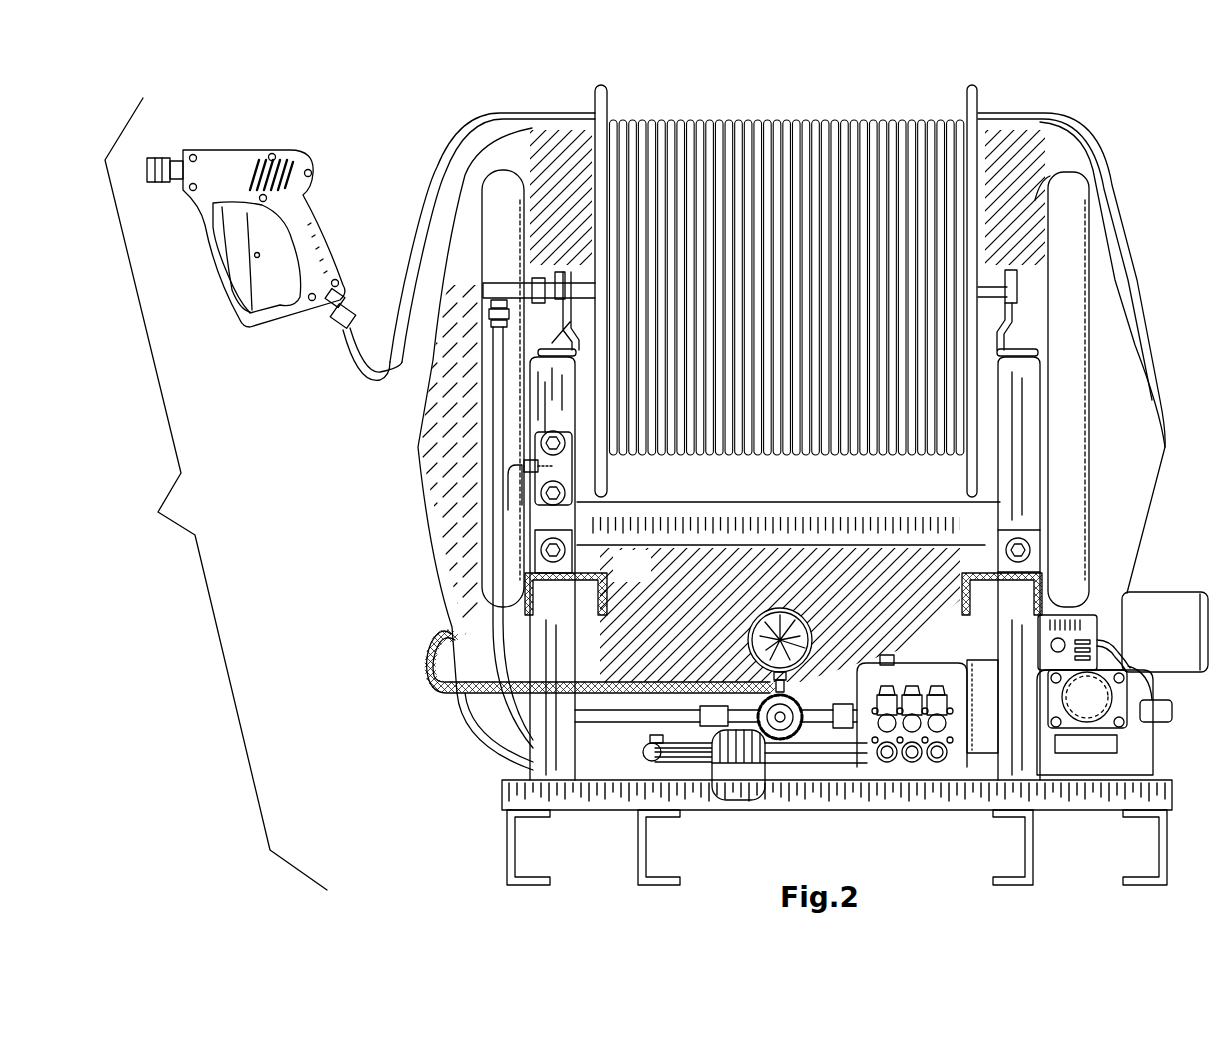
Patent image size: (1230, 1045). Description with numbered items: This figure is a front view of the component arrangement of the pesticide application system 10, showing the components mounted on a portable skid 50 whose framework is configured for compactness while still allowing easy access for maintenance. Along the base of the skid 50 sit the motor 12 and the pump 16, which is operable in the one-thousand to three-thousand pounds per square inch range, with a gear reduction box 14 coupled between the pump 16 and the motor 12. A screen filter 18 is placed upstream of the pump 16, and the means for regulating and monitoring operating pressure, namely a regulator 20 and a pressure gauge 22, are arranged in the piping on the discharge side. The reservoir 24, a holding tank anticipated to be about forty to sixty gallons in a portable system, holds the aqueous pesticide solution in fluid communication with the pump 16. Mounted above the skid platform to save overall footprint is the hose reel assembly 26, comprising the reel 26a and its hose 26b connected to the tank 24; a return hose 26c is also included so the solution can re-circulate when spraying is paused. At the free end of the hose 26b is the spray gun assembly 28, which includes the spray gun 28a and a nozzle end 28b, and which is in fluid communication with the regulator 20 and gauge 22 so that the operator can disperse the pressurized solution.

The system 10 is at (216, 494).
The motor 12 is at (1127, 753).
The gear reduction box 14 is at (990, 717).
The pump 16 is at (873, 740).
The screen filter 18 is at (762, 780).
The regulator 20 is at (715, 695).
The pressure gauge 22 is at (780, 658).
The reservoir 24 is at (527, 157).
The hose reel assembly 26 is at (749, 405).
The reel 26a is at (973, 110).
The hose 26b is at (487, 113).
The return hose 26c is at (437, 680).
The spray gun assembly 28 is at (271, 224).
The spray gun 28a is at (298, 167).
The nozzle 28b is at (143, 182).
The skid 50 is at (488, 805).